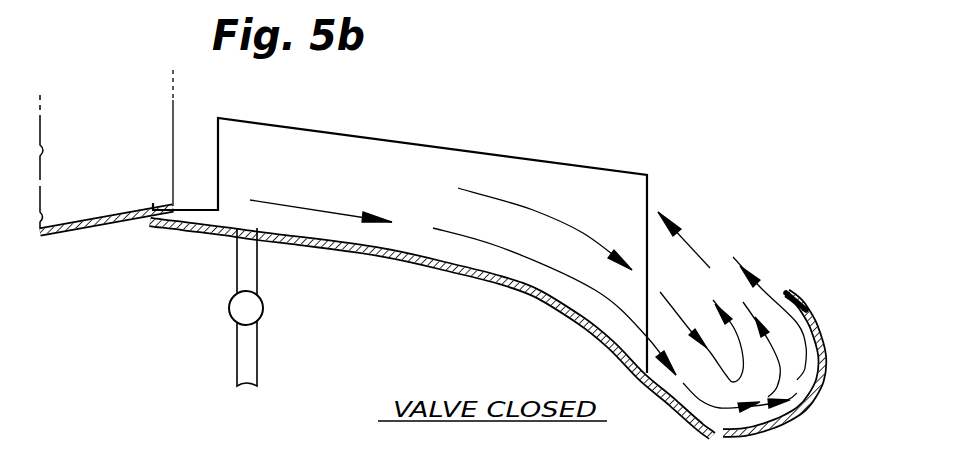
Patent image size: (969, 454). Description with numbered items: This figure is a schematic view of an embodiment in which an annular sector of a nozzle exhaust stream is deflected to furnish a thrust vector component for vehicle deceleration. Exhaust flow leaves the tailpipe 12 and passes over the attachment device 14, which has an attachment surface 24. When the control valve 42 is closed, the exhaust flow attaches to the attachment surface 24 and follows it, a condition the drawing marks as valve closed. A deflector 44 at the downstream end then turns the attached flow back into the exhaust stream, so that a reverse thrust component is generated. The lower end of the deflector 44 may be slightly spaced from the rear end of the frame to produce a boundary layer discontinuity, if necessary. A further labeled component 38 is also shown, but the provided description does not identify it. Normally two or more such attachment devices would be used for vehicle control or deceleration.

The tailpipe 12 is at (97, 226).
The attachment device 14 is at (392, 268).
The attachment surface 24 is at (466, 268).
The valve flap 38 is at (452, 167).
The control valve 42 is at (230, 312).
The deflector 44 is at (817, 398).